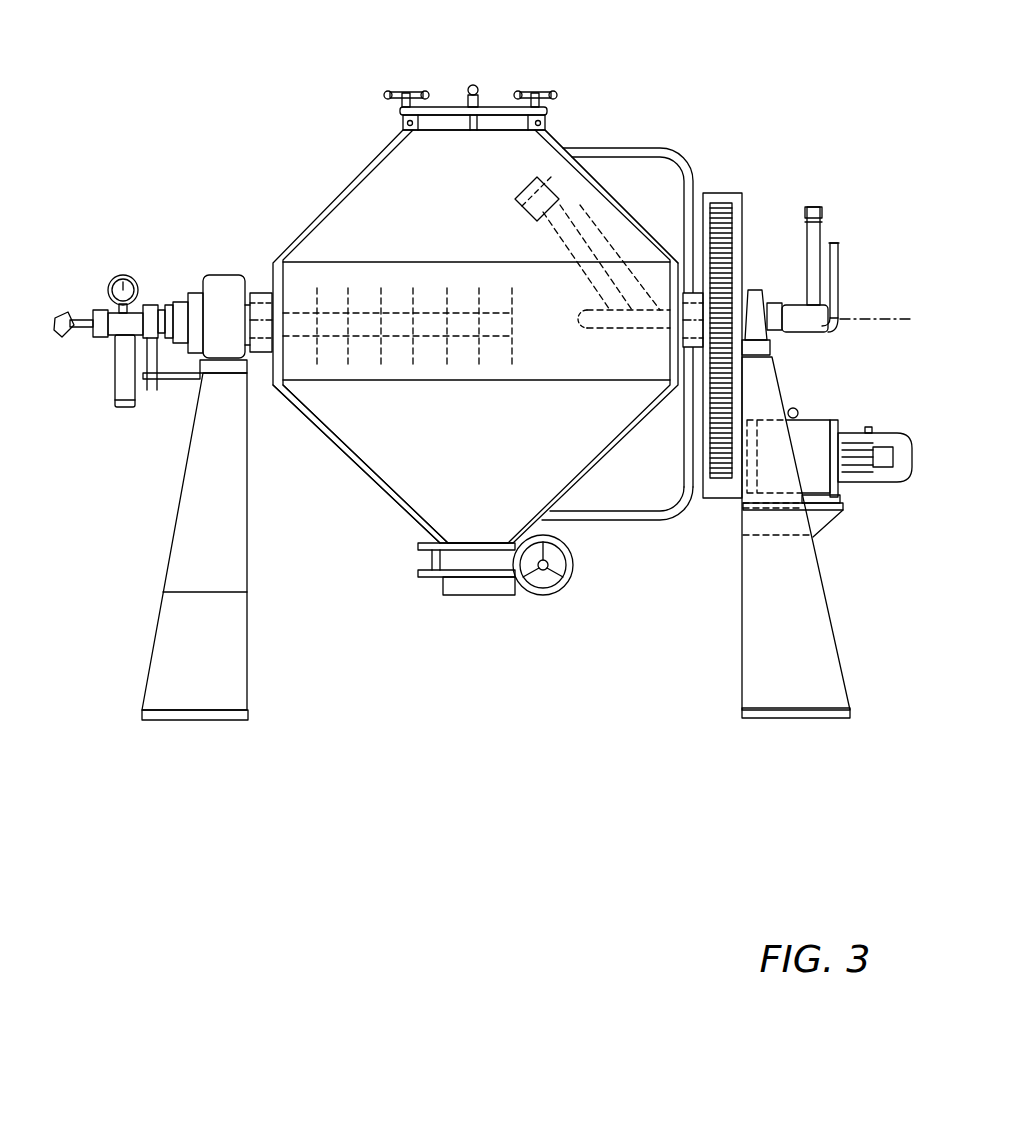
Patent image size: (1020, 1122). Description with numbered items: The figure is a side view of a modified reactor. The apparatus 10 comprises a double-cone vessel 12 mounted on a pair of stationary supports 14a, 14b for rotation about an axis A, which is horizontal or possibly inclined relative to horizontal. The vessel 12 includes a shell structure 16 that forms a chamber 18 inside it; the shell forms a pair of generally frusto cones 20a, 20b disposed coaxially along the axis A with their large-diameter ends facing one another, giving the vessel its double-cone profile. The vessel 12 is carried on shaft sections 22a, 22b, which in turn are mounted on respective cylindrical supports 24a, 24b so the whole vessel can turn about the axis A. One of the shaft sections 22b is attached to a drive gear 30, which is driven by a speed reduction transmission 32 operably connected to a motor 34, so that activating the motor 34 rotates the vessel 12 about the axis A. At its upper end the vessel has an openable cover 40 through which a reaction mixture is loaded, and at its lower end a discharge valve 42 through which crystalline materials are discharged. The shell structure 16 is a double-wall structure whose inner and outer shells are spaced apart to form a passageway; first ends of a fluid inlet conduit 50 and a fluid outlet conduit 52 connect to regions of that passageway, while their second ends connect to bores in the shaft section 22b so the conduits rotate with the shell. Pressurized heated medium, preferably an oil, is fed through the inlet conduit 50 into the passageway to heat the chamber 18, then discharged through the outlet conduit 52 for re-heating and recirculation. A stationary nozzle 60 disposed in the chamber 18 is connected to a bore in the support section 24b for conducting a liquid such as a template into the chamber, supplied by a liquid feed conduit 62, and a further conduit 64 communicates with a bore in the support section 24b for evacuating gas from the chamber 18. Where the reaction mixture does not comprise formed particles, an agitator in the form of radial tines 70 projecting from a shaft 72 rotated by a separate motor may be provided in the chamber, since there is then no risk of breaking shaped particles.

The apparatus 10 is at (460, 292).
The double-cone vessel 12 is at (327, 193).
The stationary support 14a is at (153, 643).
The stationary support 14b is at (845, 633).
The shell structure 16 is at (350, 467).
The chamber 18 is at (417, 447).
The frusto cone 20a is at (313, 430).
The frusto cone 20b is at (625, 195).
The shaft section 22a is at (260, 293).
The shaft section 22b is at (696, 318).
The cylindrical support 24a is at (257, 323).
The cylindrical support 24b is at (733, 273).
The drive gear 30 is at (722, 203).
The speed reduction transmission 32 is at (712, 450).
The motor 34 is at (830, 413).
The openable cover 40 is at (494, 102).
The discharge valve 42 is at (420, 600).
The fluid inlet conduit 50 is at (598, 162).
The fluid outlet conduit 52 is at (593, 523).
The stationary nozzle 60 is at (533, 253).
The liquid feed conduit 62 is at (822, 227).
The conduit 64 is at (527, 187).
The radial tines 70 is at (487, 358).
The shaft 72 is at (510, 322).
The axis A is at (887, 318).